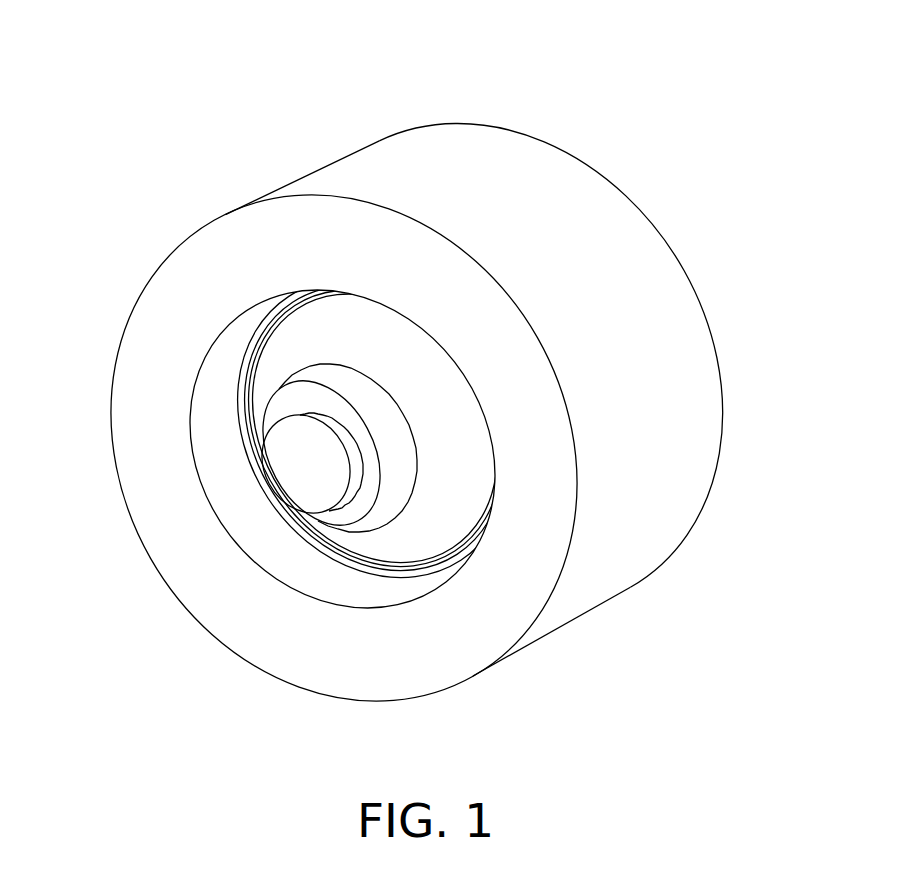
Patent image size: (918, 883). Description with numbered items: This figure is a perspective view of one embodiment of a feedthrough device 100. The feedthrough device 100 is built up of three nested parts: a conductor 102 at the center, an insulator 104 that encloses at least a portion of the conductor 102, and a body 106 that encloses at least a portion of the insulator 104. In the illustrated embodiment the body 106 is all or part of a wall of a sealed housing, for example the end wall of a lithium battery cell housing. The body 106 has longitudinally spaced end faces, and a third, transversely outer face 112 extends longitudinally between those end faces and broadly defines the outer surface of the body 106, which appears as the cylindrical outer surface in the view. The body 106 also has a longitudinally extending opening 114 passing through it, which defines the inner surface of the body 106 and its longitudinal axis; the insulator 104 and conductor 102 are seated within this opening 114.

The feedthrough device 100 is at (178, 64).
The conductor 102 is at (302, 466).
The insulator 104 is at (277, 415).
The body 106 is at (152, 317).
The third face 112 is at (660, 487).
The opening 114 is at (345, 378).